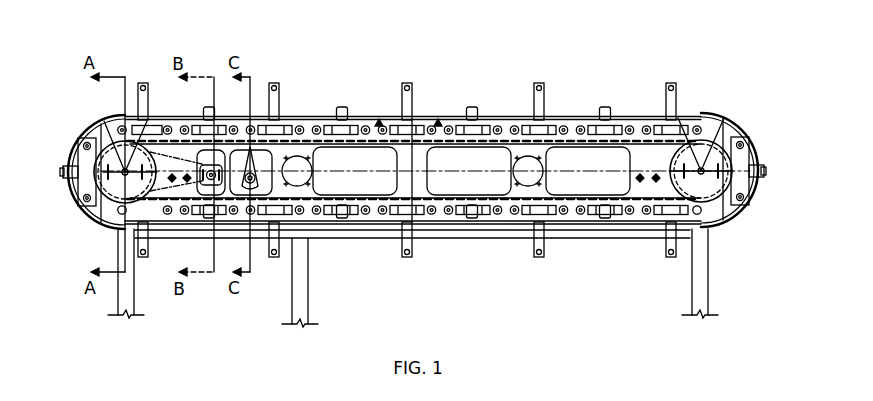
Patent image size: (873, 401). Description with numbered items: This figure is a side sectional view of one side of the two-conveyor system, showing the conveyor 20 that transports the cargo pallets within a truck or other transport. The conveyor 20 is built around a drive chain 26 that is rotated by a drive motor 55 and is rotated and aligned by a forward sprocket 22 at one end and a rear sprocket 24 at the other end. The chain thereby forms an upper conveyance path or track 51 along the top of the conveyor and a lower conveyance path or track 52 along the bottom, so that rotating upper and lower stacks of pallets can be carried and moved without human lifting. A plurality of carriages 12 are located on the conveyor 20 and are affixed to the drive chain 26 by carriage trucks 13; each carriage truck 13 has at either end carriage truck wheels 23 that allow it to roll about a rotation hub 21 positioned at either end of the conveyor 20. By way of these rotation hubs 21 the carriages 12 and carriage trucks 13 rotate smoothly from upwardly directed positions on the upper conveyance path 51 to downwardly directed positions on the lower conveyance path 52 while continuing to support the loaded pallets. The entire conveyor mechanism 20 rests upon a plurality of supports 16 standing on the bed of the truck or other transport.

The carriage 12 is at (538, 83).
The carriage truck 13 is at (577, 117).
The support 16 is at (520, 268).
The conveyor 20 is at (738, 104).
The rotation hub 21 is at (82, 131).
The forward sprocket 22 is at (71, 186).
The carriage truck wheel 23 is at (372, 120).
The rear sprocket 24 is at (731, 137).
The drive chain 26 is at (305, 118).
The upper conveyance path 51 is at (168, 112).
The lower conveyance path 52 is at (377, 228).
The drive motor 55 is at (233, 218).